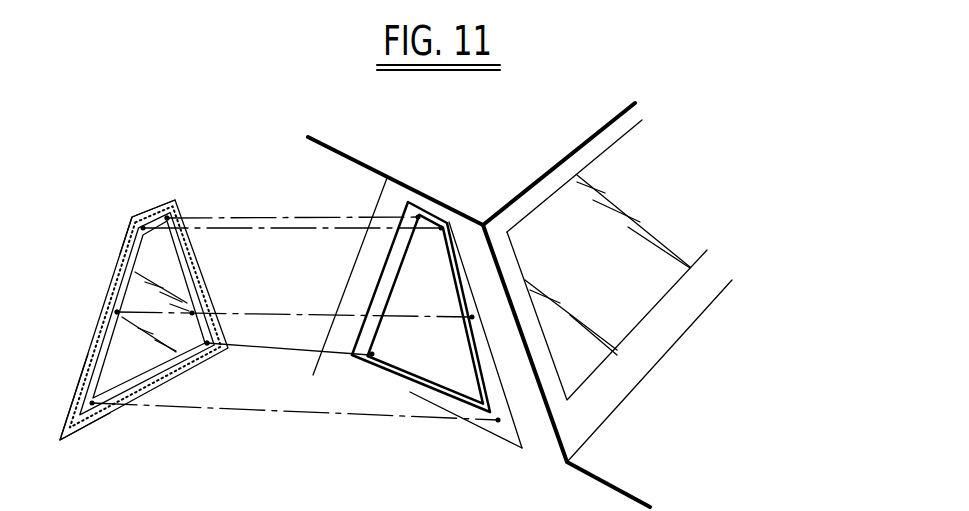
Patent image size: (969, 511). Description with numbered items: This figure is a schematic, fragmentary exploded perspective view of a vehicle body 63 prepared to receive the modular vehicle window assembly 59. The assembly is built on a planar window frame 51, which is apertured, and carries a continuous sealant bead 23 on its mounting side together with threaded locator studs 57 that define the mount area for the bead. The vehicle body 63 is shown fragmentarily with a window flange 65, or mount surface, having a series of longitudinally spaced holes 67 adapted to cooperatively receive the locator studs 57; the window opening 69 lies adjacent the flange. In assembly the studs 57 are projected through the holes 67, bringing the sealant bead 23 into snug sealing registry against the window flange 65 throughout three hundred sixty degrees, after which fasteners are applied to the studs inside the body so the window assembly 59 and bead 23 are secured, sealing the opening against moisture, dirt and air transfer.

The sealant bead 23 is at (100, 338).
The planar window frame 51 is at (92, 404).
The locator studs 57 is at (167, 218).
The modular vehicle window assembly 59 is at (136, 205).
The vehicle body 63 is at (407, 163).
The window flange 65 is at (458, 268).
The holes 67 is at (472, 317).
The window opening 69 is at (438, 357).